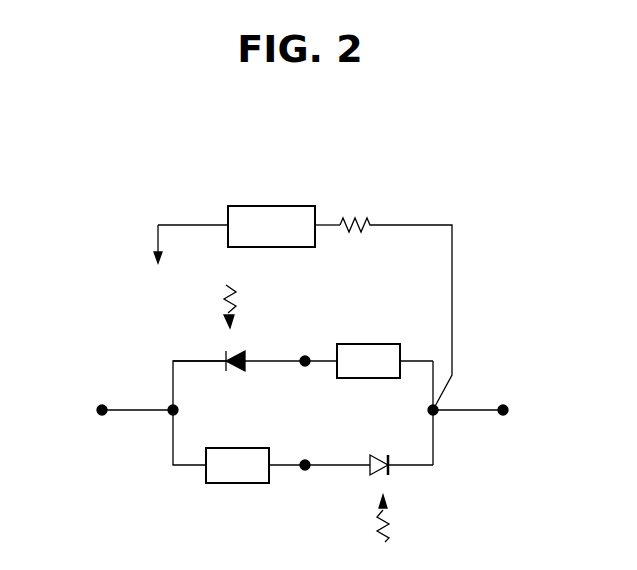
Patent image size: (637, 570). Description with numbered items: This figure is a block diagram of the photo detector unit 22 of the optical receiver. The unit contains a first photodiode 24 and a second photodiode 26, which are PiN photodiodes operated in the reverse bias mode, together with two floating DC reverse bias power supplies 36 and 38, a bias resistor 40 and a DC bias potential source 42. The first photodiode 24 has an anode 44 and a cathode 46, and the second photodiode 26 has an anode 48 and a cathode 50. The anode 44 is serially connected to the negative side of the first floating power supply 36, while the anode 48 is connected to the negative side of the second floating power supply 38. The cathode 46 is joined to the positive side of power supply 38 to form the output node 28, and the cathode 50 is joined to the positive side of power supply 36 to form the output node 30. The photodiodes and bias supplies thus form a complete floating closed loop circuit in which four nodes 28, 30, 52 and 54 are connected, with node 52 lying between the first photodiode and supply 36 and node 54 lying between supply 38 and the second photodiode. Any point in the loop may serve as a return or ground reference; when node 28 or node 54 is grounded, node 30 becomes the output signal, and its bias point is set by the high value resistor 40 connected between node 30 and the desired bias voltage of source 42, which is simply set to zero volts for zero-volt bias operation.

The photo detector unit 22 is at (320, 182).
The first photodiode 24 is at (238, 352).
The second photodiode 26 is at (378, 476).
The output node 28 is at (102, 406).
The output node 30 is at (450, 408).
The first floating DC reverse bias power supply 36 is at (363, 344).
The second floating DC reverse bias power supply 38 is at (206, 480).
The bias resistor 40 is at (367, 222).
The DC bias potential source 42 is at (268, 206).
The anode 44 is at (263, 361).
The cathode 46 is at (200, 361).
The anode 48 is at (371, 475).
The cathode 50 is at (390, 468).
The node 52 is at (309, 358).
The node 54 is at (305, 470).